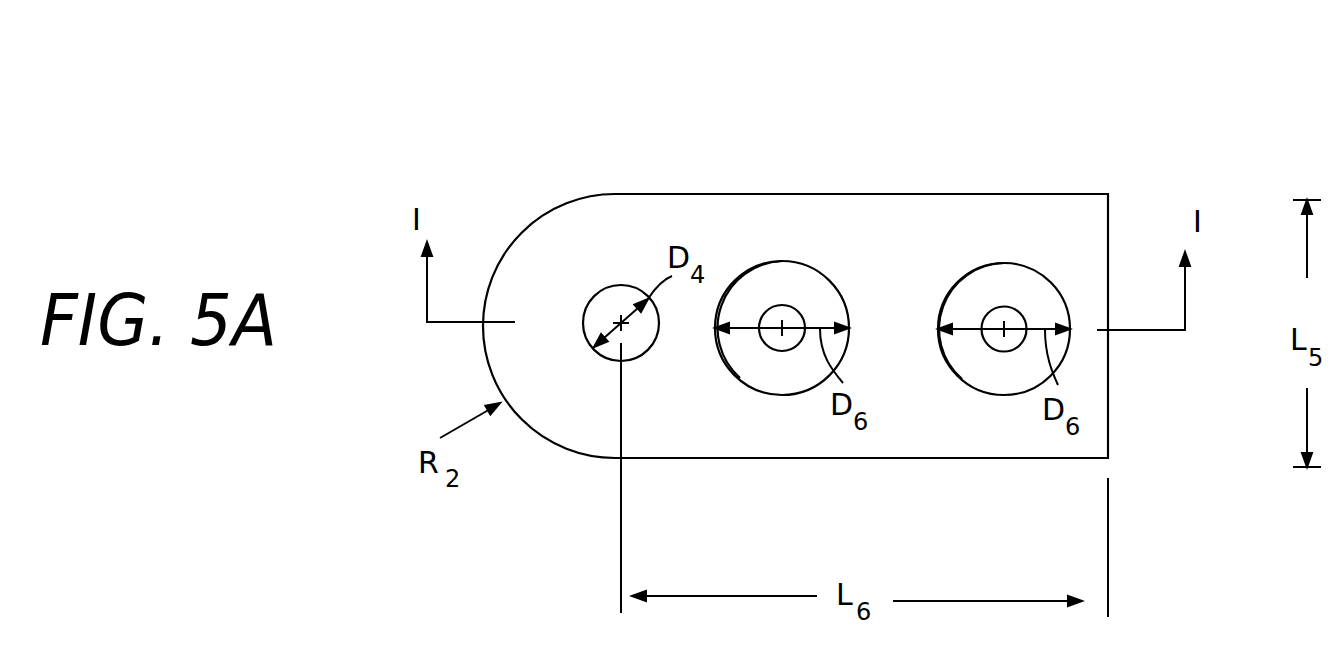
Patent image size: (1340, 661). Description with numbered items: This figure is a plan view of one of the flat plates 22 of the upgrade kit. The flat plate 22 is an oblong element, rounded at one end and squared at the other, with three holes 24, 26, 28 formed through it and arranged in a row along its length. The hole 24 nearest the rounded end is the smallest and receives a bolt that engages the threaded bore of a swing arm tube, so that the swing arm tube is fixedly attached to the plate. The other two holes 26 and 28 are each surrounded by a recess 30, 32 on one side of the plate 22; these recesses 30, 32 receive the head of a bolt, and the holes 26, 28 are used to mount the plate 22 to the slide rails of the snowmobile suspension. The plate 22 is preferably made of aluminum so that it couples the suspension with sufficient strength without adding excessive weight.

The flat plate 22 is at (948, 150).
The hole 24 is at (622, 285).
The hole 26 is at (797, 305).
The hole 28 is at (1008, 308).
The recess 30 is at (772, 370).
The recess 32 is at (993, 378).